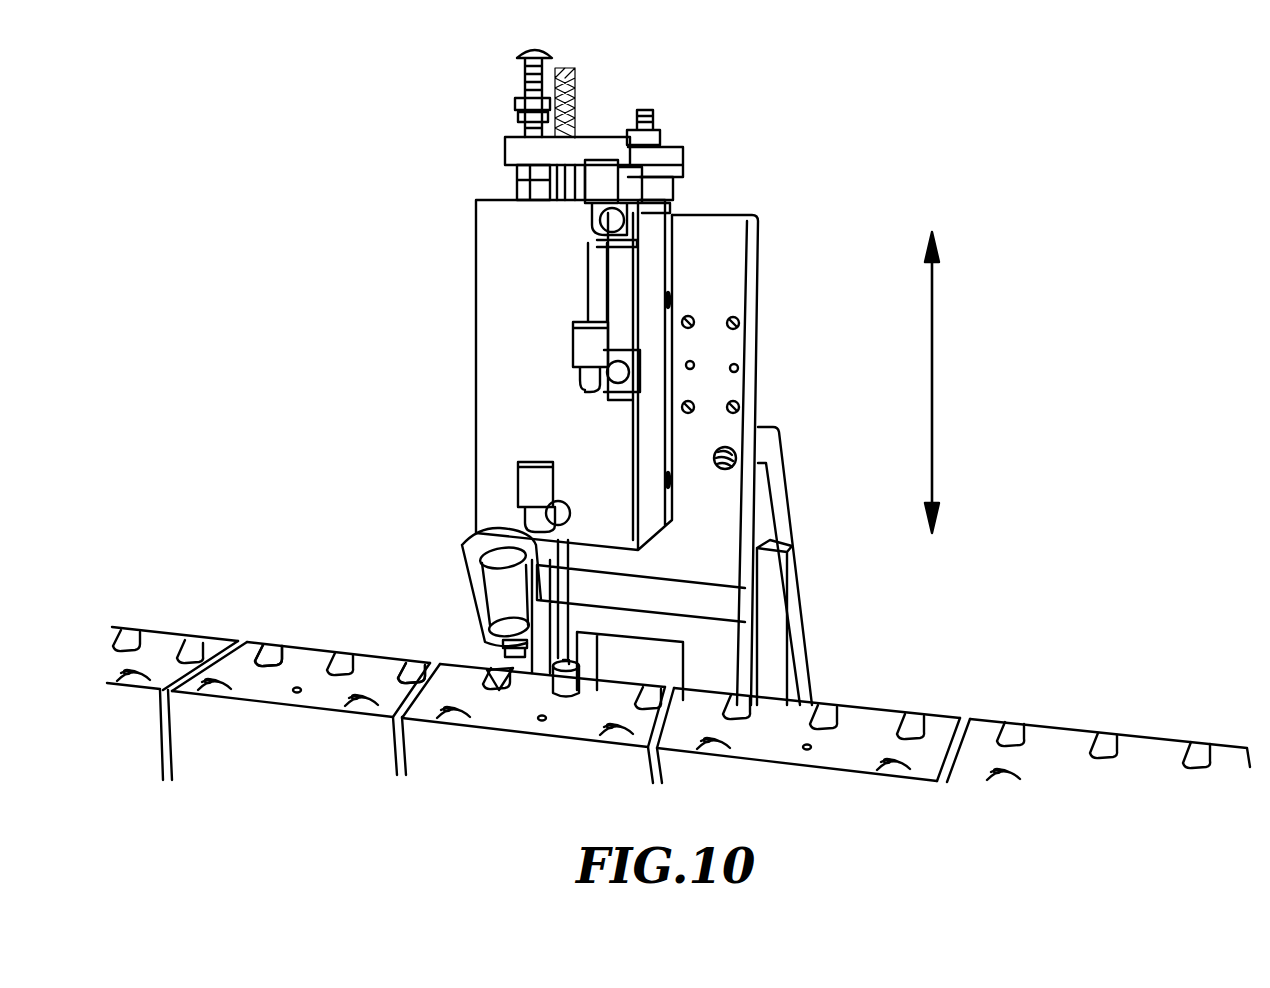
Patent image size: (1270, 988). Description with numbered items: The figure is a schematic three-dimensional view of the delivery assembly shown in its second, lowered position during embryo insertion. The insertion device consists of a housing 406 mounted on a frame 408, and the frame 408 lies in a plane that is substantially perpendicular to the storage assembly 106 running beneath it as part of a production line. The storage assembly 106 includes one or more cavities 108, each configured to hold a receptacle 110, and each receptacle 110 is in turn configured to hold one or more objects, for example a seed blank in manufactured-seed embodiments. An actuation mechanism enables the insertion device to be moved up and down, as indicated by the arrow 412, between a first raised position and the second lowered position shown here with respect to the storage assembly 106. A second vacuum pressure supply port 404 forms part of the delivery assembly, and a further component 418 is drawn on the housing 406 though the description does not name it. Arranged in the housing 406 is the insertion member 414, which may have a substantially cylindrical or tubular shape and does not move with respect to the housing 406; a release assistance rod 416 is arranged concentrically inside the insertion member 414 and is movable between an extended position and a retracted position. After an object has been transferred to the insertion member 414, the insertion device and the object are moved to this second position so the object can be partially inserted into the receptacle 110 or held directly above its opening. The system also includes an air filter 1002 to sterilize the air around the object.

The storage assembly 106 is at (280, 707).
The cavities 108 is at (430, 655).
The receptacle 110 is at (543, 688).
The second vacuum pressure supply port 404 is at (525, 490).
The housing 406 is at (505, 268).
The frame 408 is at (712, 406).
The arrow 412 is at (934, 375).
The insertion member 414 is at (568, 592).
The release assistance rod 416 is at (580, 660).
The pneumatic cylinder 418 is at (625, 292).
The air filter 1002 is at (497, 590).